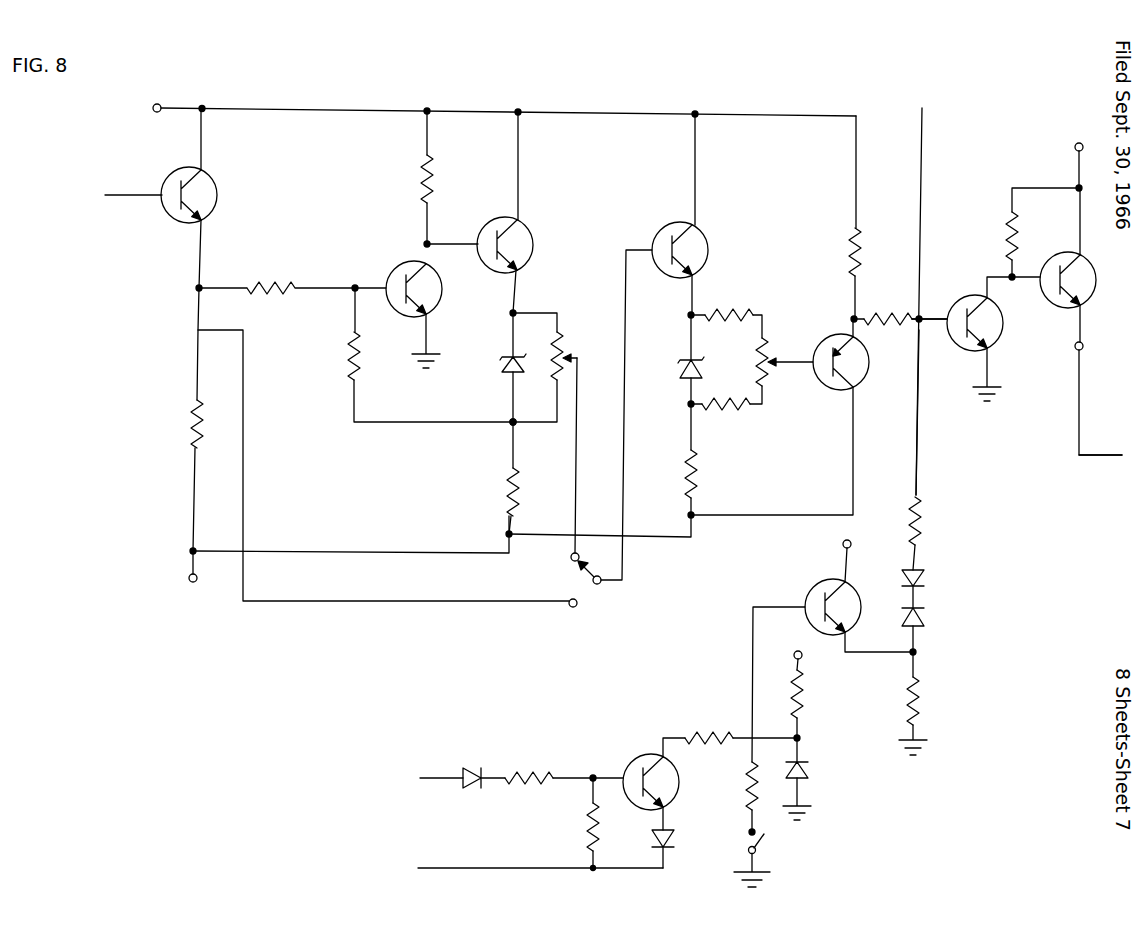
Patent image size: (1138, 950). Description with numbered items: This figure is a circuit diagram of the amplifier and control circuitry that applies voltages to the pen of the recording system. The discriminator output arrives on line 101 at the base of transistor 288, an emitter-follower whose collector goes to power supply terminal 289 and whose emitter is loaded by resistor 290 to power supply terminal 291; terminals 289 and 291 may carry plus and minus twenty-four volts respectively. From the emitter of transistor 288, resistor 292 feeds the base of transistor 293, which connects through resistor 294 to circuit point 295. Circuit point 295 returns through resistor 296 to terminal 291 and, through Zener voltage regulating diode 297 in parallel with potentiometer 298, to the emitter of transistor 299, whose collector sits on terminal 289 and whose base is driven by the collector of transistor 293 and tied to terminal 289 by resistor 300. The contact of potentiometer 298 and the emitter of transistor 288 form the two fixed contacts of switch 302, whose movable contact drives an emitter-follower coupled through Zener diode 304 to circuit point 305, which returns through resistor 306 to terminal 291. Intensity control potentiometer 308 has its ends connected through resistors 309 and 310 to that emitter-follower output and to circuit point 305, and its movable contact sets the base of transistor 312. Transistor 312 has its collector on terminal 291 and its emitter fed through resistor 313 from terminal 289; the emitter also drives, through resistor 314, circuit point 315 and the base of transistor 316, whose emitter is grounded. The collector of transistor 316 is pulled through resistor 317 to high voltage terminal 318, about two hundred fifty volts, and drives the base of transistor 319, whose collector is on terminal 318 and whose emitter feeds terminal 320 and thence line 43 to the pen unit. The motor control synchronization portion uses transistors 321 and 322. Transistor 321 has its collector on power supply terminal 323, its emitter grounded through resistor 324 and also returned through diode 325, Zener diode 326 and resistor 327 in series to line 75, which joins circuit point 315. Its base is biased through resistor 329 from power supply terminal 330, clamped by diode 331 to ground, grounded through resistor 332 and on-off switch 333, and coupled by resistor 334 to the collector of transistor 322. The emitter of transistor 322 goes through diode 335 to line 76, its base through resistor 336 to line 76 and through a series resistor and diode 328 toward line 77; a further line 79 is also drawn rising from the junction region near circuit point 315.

The line 101 is at (132, 192).
The transistor 288 is at (208, 194).
The power supply terminal 289 is at (166, 105).
The load resistor 290 is at (192, 438).
The power supply terminal 291 is at (187, 578).
The resistor 292 is at (278, 284).
The transistor 293 is at (432, 301).
The resistor 294 is at (350, 359).
The circuit point 295 is at (510, 420).
The resistor 296 is at (506, 482).
The Zener voltage regulating diode 297 is at (501, 359).
The potentiometer 298 is at (567, 349).
The transistor 299 is at (528, 246).
The resistor 300 is at (432, 193).
The switch 302 is at (590, 596).
The Zener diode 304 is at (681, 361).
The circuit point 305 is at (706, 248).
The resistor 306 is at (685, 481).
The intensity control potentiometer 308 is at (768, 357).
The resistor 309 is at (737, 314).
The resistor 310 is at (723, 410).
The transistor 312 is at (855, 376).
The resistor 313 is at (858, 267).
The resistor 314 is at (865, 316).
The circuit point 315 is at (917, 322).
The transistor 316 is at (967, 347).
The resistor 317 is at (1018, 242).
The high voltage terminal 318 is at (1074, 147).
The transistor 319 is at (1079, 263).
The terminal 320 is at (1084, 347).
The transistor 321 is at (816, 605).
The transistor 322 is at (667, 783).
The power supply terminal 323 is at (842, 544).
The resistor 324 is at (922, 701).
The diode 325 is at (926, 609).
The Zener diode 326 is at (925, 582).
The resistor 327 is at (923, 506).
The diode 328 is at (476, 772).
The resistor 329 is at (805, 691).
The power supply terminal 330 is at (803, 657).
The diode 331 is at (809, 766).
The resistor 332 is at (748, 786).
The on-off switch 333 is at (765, 845).
The resistor 334 is at (684, 736).
The diode 335 is at (673, 853).
The resistor 336 is at (587, 816).
The line 43 is at (1093, 457).
The line 75 is at (918, 461).
The line 76 is at (440, 867).
The line 77 is at (429, 773).
The line 79 is at (930, 127).